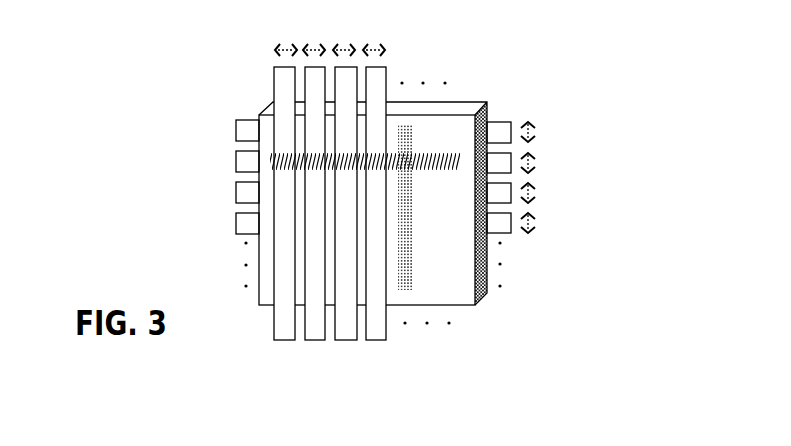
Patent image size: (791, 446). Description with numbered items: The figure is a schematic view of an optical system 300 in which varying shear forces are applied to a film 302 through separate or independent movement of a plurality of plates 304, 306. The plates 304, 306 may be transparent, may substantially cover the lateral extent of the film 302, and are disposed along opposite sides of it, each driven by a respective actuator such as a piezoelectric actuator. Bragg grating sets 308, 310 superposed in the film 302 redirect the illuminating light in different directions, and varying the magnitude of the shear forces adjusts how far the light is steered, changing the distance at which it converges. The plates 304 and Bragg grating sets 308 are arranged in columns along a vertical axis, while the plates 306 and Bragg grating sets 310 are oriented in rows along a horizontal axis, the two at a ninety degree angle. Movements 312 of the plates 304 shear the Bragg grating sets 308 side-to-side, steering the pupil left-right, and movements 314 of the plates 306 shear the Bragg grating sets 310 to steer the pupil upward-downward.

The optical system 300 is at (206, 86).
The film 302 is at (478, 300).
The plates 304 is at (345, 342).
The plates 306 is at (236, 158).
The Bragg grating set 308 is at (410, 283).
The Bragg grating set 310 is at (430, 150).
The movements 312 is at (285, 44).
The movements 314 is at (533, 222).